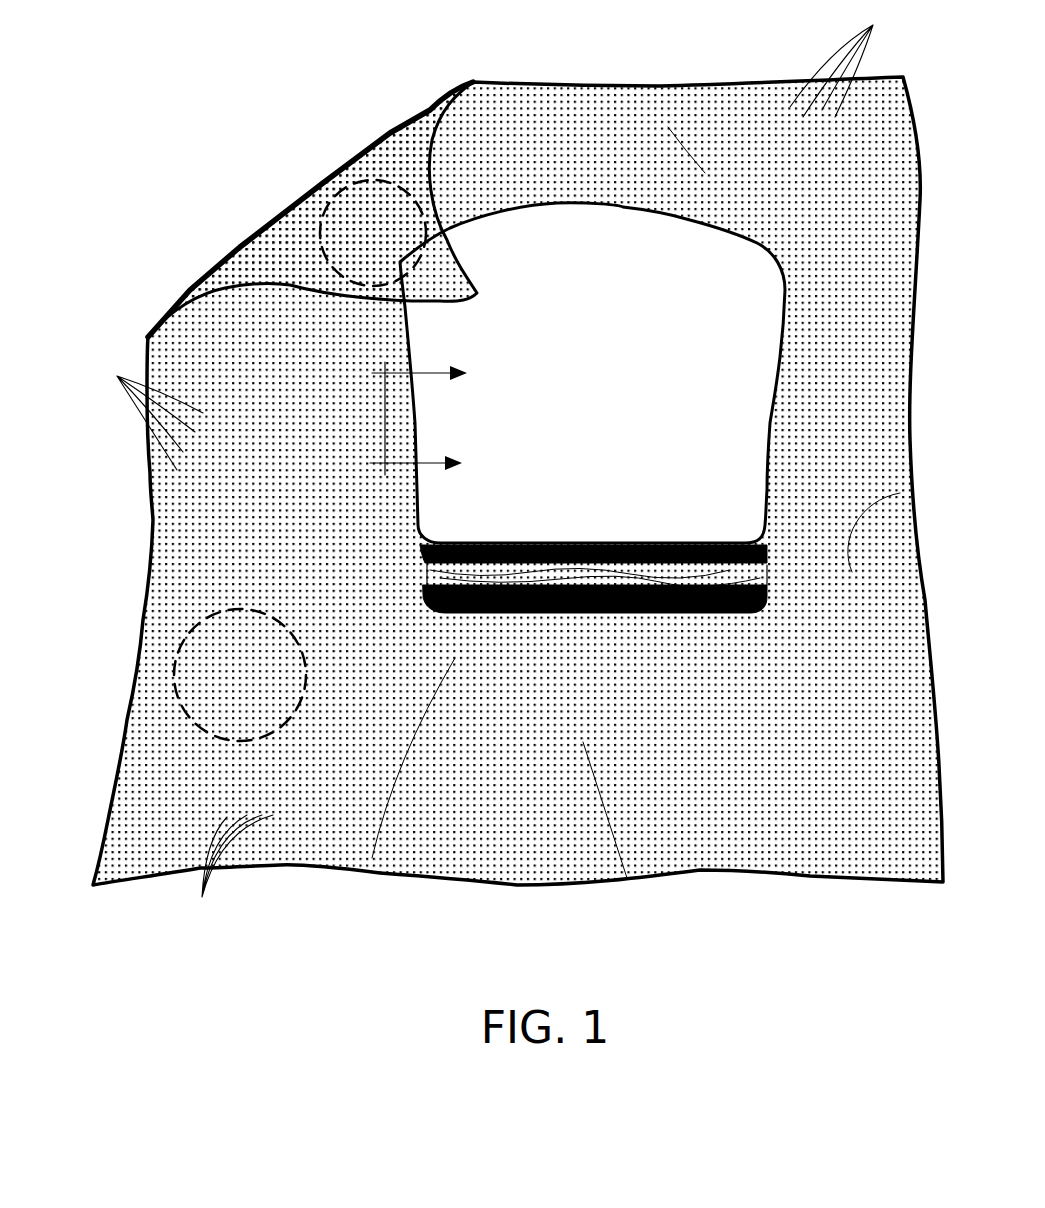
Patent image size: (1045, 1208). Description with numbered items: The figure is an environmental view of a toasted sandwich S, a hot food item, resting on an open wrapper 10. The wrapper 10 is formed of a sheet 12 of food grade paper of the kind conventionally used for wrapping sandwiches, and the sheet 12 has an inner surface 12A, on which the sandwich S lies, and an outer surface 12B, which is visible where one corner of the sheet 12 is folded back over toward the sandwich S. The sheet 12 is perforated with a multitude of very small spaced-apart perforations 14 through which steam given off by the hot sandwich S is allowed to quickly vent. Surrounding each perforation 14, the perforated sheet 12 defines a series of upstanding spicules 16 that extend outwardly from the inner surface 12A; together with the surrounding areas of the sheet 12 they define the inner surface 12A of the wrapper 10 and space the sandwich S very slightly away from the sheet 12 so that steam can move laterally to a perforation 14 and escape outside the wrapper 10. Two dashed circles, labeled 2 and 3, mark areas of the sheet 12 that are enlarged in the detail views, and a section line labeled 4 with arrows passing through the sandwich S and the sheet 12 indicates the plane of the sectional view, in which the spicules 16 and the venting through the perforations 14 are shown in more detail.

The wrapper 10 is at (486, 466).
The sheet 12 is at (486, 442).
The inner surface 12A is at (186, 576).
The outer surface 12B is at (237, 278).
The perforations 14 is at (410, 145).
The spicules 16 is at (493, 468).
The detail area of FIG. 2 is at (333, 187).
The detail area of FIG. 3 is at (168, 667).
The section line 4- 4 is at (409, 418).
The sandwich S is at (612, 213).